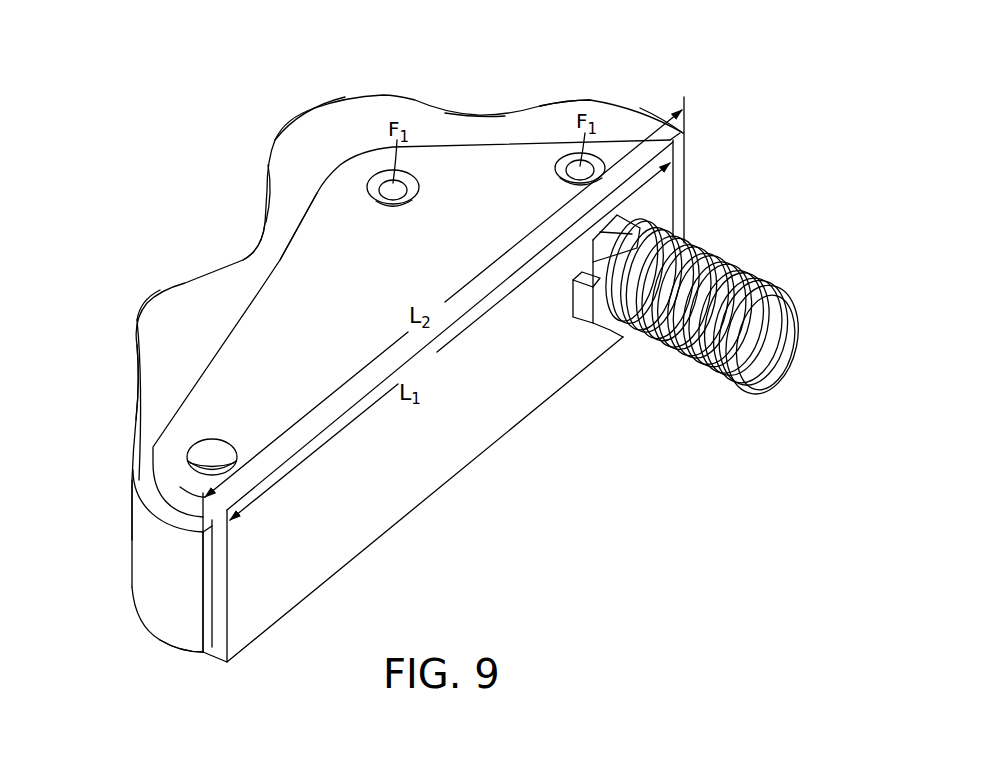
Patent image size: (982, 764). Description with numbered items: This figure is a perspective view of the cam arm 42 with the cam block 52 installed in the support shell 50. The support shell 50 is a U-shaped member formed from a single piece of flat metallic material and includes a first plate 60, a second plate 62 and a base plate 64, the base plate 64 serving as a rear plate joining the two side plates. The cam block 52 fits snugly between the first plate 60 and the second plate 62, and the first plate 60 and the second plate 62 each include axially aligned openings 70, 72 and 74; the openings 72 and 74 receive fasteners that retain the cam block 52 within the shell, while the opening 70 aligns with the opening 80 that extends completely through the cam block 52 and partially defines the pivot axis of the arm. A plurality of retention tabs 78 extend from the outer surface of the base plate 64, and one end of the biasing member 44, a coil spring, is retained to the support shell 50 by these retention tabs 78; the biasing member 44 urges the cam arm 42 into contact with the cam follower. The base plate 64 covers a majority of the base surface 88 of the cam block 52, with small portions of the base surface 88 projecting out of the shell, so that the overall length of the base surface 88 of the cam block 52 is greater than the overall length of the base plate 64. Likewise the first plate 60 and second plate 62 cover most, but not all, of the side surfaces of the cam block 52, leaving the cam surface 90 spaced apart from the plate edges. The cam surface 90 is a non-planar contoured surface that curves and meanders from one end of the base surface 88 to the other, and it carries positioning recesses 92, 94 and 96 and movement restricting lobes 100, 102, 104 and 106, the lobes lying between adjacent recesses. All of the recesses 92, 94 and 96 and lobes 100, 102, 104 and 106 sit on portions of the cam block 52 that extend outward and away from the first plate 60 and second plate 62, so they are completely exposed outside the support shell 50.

The cam arm 42 is at (599, 72).
The biasing member 44 is at (753, 277).
The support shell 50 is at (655, 204).
The cam block 52 is at (637, 113).
The first plate 60 is at (338, 213).
The second plate 62 is at (188, 646).
The base plate 64 is at (417, 453).
The opening 70 is at (220, 450).
The opening 72 is at (398, 205).
The opening 74 is at (555, 171).
The retention tabs 78 is at (575, 262).
The opening 80 is at (211, 466).
The base surface 88 is at (207, 618).
The cam surface 90 is at (162, 592).
The positioning recess 92 is at (140, 380).
The positioning recess 94 is at (248, 252).
The positioning recess 96 is at (477, 113).
The movement restricting lobe 100 is at (132, 508).
The movement restricting lobe 102 is at (145, 304).
The movement restricting lobe 104 is at (297, 112).
The movement restricting lobe 106 is at (560, 99).